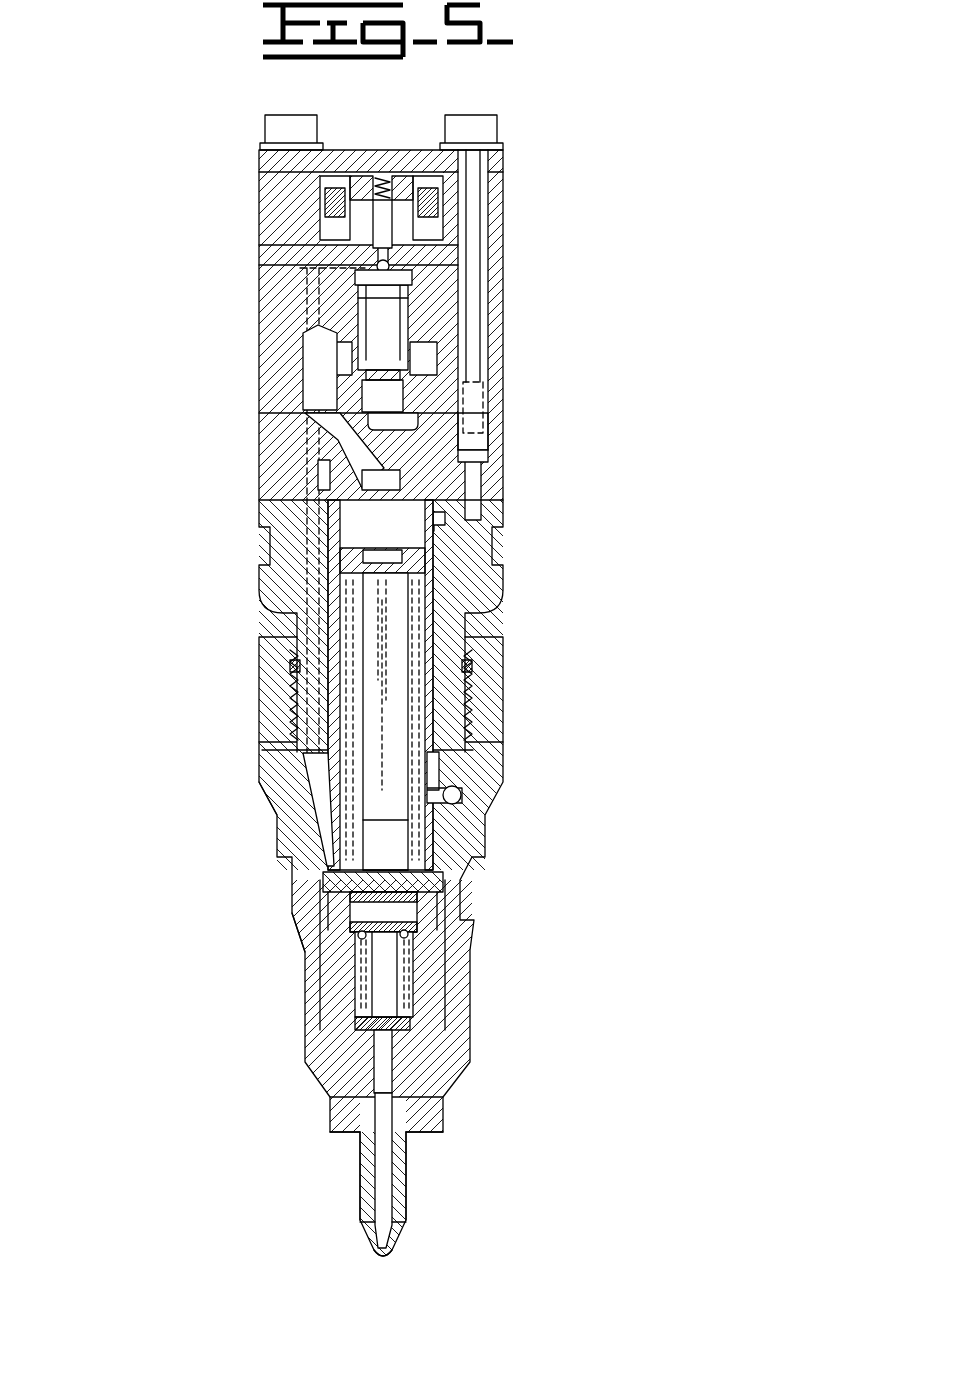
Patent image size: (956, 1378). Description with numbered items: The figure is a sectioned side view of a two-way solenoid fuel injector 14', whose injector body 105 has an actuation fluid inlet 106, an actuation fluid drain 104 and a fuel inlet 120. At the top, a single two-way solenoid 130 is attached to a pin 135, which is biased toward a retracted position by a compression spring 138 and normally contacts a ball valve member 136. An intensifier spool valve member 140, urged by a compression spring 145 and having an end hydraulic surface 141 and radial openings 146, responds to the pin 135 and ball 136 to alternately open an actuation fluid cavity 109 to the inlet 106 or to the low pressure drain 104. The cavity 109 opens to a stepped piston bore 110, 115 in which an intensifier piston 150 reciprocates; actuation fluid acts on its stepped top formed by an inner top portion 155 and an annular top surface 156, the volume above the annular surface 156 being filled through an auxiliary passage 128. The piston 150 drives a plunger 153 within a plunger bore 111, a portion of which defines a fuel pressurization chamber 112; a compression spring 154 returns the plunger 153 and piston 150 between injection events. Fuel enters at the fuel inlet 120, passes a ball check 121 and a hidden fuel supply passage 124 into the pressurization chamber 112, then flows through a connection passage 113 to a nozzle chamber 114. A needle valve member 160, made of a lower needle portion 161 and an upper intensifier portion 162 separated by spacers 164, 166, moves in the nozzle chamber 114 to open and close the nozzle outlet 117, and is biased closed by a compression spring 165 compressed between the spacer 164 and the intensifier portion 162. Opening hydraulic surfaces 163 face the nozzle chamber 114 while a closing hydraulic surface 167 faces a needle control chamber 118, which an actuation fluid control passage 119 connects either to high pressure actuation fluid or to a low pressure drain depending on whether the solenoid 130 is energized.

The two-way solenoid fuel injector 14' is at (110, 687).
The actuation fluid drain 104 is at (485, 310).
The injector body 105 is at (300, 610).
The actuation fluid inlet 106 is at (440, 628).
The actuation fluid cavity 109 is at (343, 440).
The stepped piston bore 110 is at (440, 690).
The plunger bore 111 is at (462, 795).
The fuel pressurization chamber 112 is at (395, 835).
The connection passage 113 is at (420, 1040).
The nozzle chamber 114 is at (432, 1117).
The stepped piston bore 115 is at (440, 518).
The nozzle outlet 117 is at (390, 1257).
The needle control chamber 118 is at (443, 892).
The actuation fluid control passage 119 is at (300, 268).
The fuel inlet 120 is at (290, 852).
The ball check 121 is at (300, 929).
The hidden fuel supply passage 124 is at (280, 885).
The auxiliary passage 128 is at (325, 468).
The two-way solenoid 130 is at (447, 195).
The pin 135 is at (470, 232).
The ball valve member 136 is at (360, 278).
The compression spring 138 is at (322, 230).
The intensifier spool valve member 140 is at (320, 372).
The end hydraulic surface 141 is at (400, 265).
The compression spring 145 is at (383, 330).
The radial openings 146 is at (380, 395).
The intensifier piston 150 is at (465, 487).
The plunger 153 is at (365, 735).
The compression spring 154 is at (470, 745).
The inner top portion 155 is at (455, 450).
The annular top surface 156 is at (370, 480).
The needle valve member 160 is at (360, 1093).
The lower needle portion 161 is at (363, 1143).
The upper intensifier portion 162 is at (413, 923).
The opening hydraulic surfaces 163 is at (365, 1100).
The spacer 164 is at (355, 1045).
The compression spring 165 is at (413, 997).
The spacer 166 is at (375, 975).
The closing hydraulic surface 167 is at (420, 870).